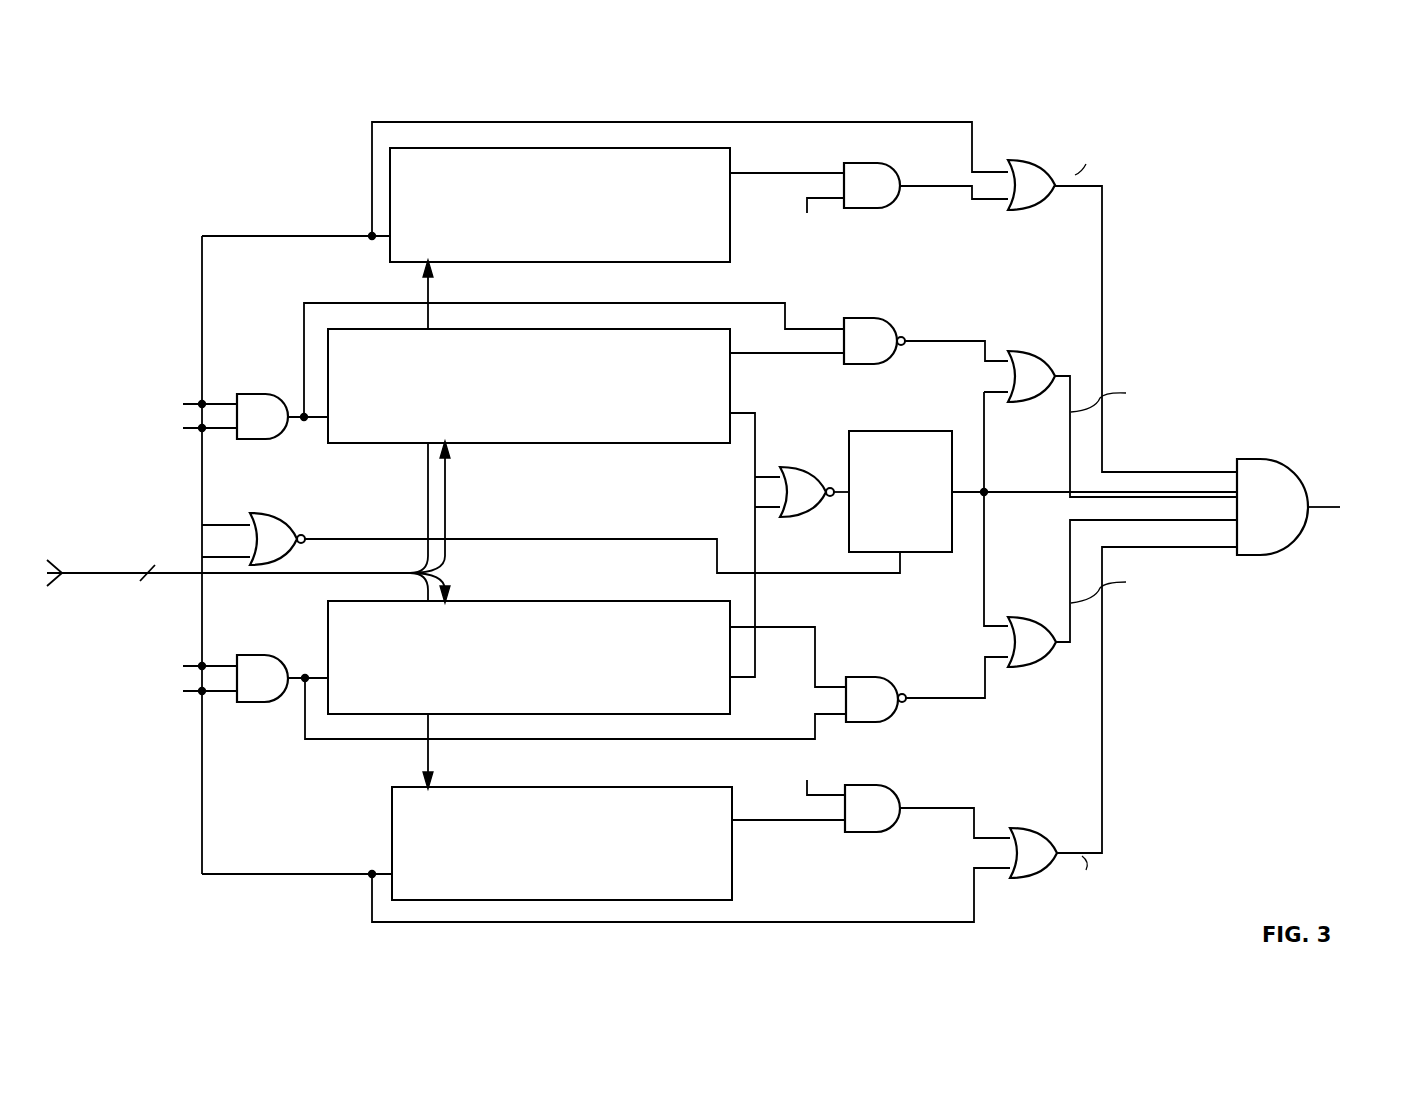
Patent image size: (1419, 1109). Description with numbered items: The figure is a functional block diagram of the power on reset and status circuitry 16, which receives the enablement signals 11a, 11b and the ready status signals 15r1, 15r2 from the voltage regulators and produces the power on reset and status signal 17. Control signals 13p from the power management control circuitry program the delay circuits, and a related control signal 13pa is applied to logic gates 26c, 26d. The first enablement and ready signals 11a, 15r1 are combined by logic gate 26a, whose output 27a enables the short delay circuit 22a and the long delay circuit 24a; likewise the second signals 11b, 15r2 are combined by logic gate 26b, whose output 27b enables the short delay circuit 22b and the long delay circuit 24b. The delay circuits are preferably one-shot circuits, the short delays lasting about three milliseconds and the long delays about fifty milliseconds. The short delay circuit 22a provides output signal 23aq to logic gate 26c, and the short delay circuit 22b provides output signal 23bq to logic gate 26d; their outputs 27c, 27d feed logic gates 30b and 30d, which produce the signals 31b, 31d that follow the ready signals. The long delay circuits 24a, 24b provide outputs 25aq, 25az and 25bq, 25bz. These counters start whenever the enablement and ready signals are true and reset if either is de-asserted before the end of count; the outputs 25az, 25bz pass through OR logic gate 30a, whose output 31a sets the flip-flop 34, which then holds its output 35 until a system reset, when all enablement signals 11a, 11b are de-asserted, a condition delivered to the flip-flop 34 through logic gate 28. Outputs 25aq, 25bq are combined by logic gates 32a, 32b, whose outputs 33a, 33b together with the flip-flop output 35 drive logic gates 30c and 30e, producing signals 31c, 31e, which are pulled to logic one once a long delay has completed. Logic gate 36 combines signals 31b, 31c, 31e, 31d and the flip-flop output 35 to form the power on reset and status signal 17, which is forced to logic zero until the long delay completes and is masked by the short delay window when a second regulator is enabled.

The power on reset and status circuitry 16 is at (272, 913).
The enablement signal 11a is at (190, 435).
The enablement signal 11b is at (190, 662).
The ready status signal 15r1 is at (196, 402).
The ready status signal 15r2 is at (190, 694).
The control signals 13p is at (112, 570).
The power-on reset bypass input 13pa is at (806, 204).
The power on reset and status signal 17 is at (1320, 506).
The short delay circuit 22a is at (510, 266).
The short delay circuit 22b is at (512, 787).
The long delay circuit 24a is at (507, 445).
The long delay circuit 24b is at (512, 600).
The short delay Q output 23aq is at (765, 172).
The short delay Q output 23bq is at (775, 824).
The long delay Q output 25aq is at (815, 358).
The long delay QZ output 25az is at (755, 460).
The long delay Q output 25bq is at (790, 625).
The long delay QZ output 25bz is at (740, 685).
The logic gate 26a is at (256, 393).
The AND gate 26b is at (258, 654).
The AND gate 26c is at (893, 172).
The AND gate 26d is at (864, 833).
The AND gate output 27a is at (296, 440).
The AND gate output 27b is at (292, 695).
The AND gate output 27c is at (950, 190).
The AND gate output 27d is at (938, 806).
The logic circuit 28 is at (275, 500).
The OR logic gate 30a is at (794, 467).
The OR gate 30b is at (1032, 160).
The logic gate 30c is at (1044, 353).
The OR gate 30d is at (1042, 830).
The OR gate 30e is at (1032, 616).
The NOR gate output 31a is at (838, 500).
The signal 31b is at (1102, 212).
The output signal 31c is at (1070, 445).
The signal 31d is at (1102, 762).
The output signal 31e is at (1071, 624).
The logic gate 32a is at (882, 318).
The NAND gate 32b is at (885, 677).
The NAND gate output 33a is at (946, 343).
The NAND gate output 33b is at (960, 695).
The flip-flop 34 is at (930, 422).
The flip-flop output lockhi 35 is at (966, 500).
The logic circuit 36 is at (1270, 459).